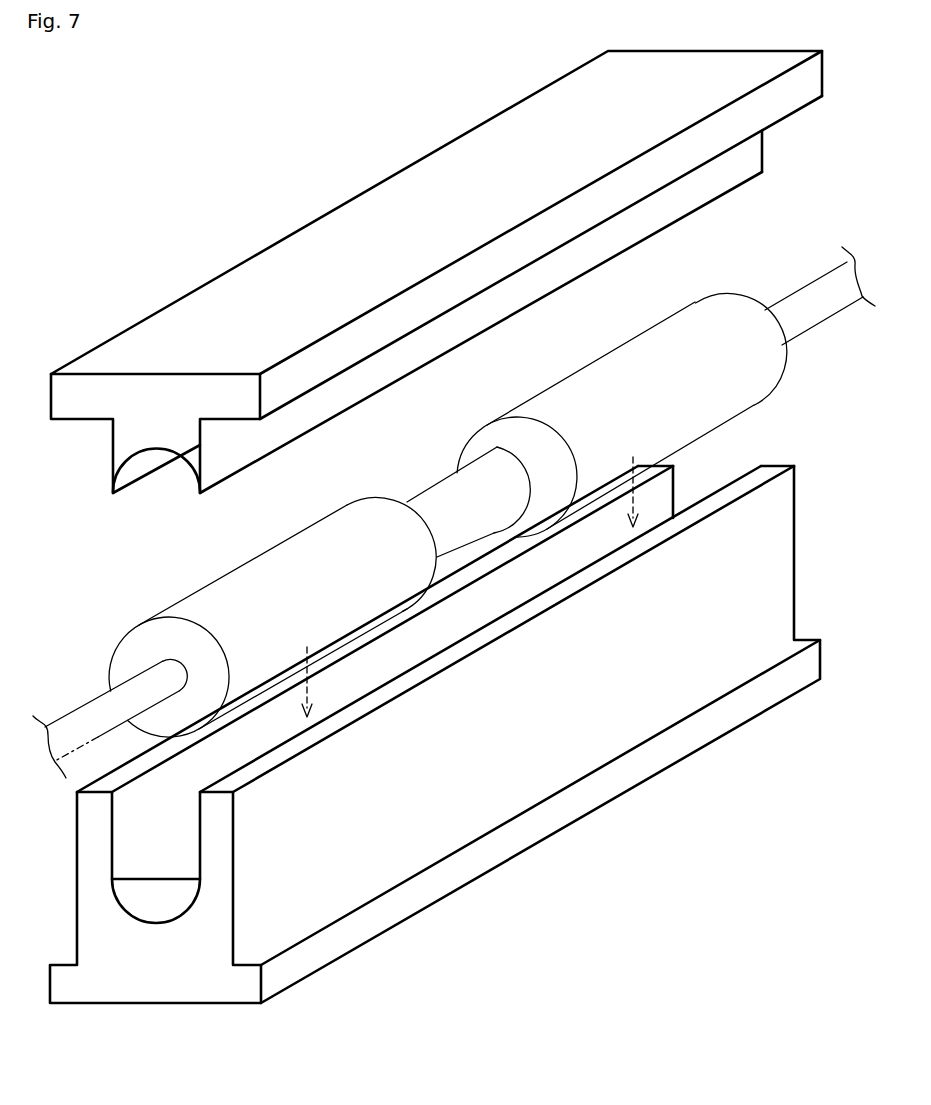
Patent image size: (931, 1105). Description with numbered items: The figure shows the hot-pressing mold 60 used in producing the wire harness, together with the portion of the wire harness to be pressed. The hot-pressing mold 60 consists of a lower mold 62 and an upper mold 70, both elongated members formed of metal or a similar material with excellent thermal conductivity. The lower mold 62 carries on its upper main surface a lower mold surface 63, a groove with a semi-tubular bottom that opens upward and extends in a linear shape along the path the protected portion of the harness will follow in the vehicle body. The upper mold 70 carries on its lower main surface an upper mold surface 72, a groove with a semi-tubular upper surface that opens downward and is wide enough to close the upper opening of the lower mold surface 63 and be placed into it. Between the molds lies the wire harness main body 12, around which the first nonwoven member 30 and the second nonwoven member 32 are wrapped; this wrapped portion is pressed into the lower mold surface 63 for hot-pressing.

The wire harness main body 12 is at (807, 284).
The first nonwoven member 30 is at (438, 477).
The second nonwoven member 32 is at (276, 546).
The hot-pressing mold 60 is at (327, 186).
The lower mold 62 is at (538, 846).
The lower mold surface 63 is at (148, 903).
The upper mold 70 is at (268, 280).
The upper mold surface 72 is at (142, 470).